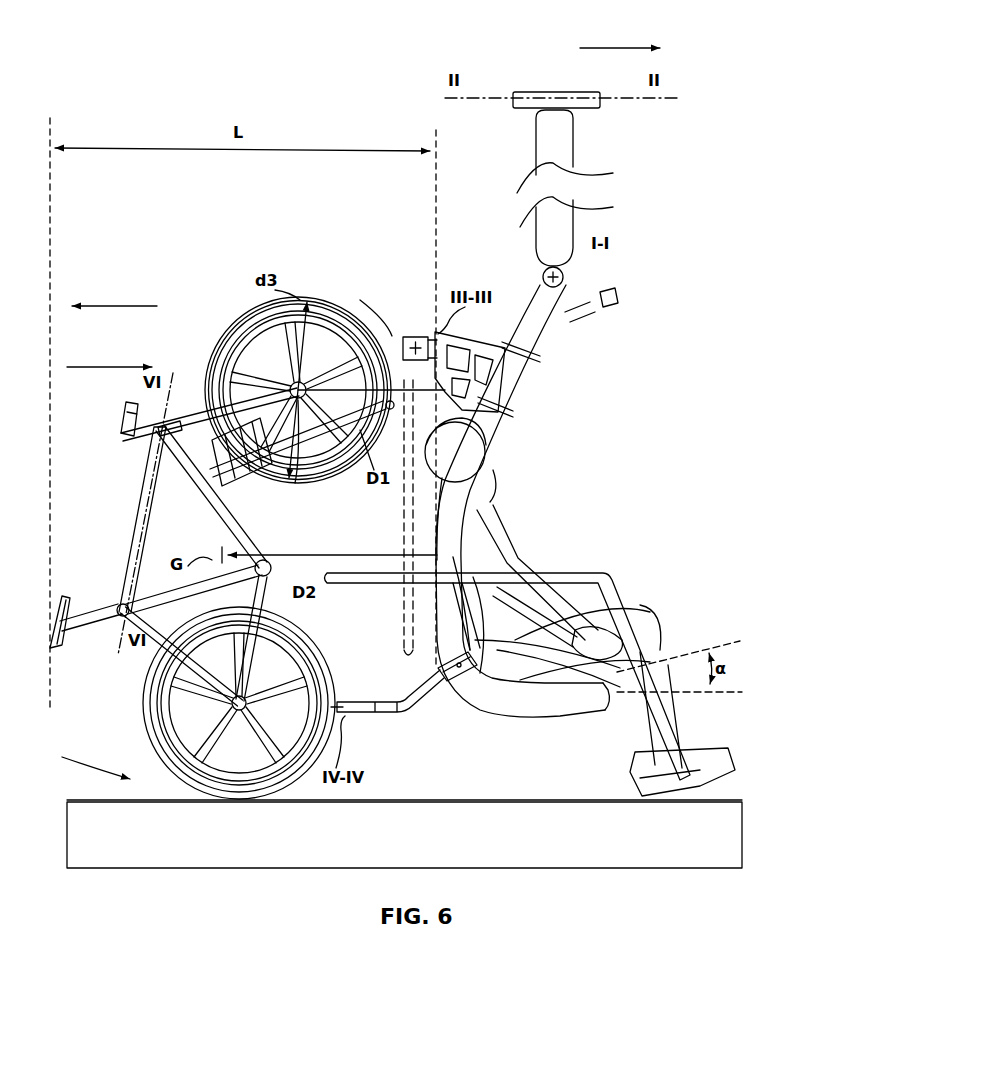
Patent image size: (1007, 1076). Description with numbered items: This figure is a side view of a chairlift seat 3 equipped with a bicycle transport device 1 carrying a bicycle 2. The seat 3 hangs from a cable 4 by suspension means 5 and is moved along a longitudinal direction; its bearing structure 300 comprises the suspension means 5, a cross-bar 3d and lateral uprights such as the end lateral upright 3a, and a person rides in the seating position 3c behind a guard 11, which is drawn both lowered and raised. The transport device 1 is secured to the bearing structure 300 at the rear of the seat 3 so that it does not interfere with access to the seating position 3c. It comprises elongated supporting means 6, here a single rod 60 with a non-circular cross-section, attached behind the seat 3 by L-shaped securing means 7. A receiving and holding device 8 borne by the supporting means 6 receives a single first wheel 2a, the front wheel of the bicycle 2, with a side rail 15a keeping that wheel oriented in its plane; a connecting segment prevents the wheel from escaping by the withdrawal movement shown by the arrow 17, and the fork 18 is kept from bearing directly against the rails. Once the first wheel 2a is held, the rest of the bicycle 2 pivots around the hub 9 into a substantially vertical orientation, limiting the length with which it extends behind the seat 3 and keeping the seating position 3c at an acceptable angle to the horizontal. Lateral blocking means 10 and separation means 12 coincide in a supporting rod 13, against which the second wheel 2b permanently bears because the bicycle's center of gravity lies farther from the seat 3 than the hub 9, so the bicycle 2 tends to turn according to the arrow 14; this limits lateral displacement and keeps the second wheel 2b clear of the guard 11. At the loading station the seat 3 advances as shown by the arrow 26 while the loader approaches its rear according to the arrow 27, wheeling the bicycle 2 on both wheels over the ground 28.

The bicycle transport device 1 is at (360, 304).
The bicycle 2 is at (117, 562).
The first wheel 2a is at (232, 322).
The second wheel 2b is at (150, 679).
The chairlift seat 3 is at (460, 692).
The end lateral upright 3a is at (490, 436).
The seating position 3c is at (562, 682).
The cross-bar 3d is at (545, 268).
The cable 4 is at (561, 89).
The suspension means 5 is at (577, 158).
The supporting means 6 is at (388, 330).
The securing means 7 is at (500, 392).
The receiving and holding device 8 is at (242, 485).
The hub 9 is at (296, 388).
The lateral blocking means 10 is at (387, 732).
The guard 11 is at (622, 594).
The separation means 12 is at (356, 716).
The supporting rod 13 is at (387, 715).
The arrow 14 is at (82, 766).
The side rail 15a is at (296, 482).
The arrow 17 is at (104, 304).
The fork 18 is at (208, 392).
The arrow 26 is at (614, 47).
The arrow 27 is at (97, 366).
The ground 28 is at (523, 799).
The single rod 60 is at (412, 335).
The bearing structure 300 is at (580, 271).